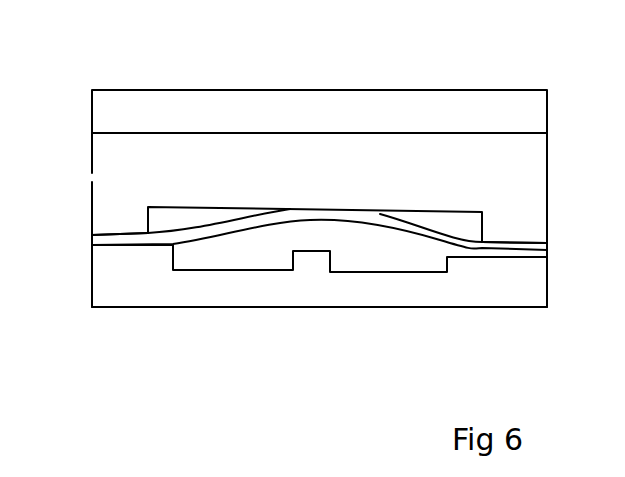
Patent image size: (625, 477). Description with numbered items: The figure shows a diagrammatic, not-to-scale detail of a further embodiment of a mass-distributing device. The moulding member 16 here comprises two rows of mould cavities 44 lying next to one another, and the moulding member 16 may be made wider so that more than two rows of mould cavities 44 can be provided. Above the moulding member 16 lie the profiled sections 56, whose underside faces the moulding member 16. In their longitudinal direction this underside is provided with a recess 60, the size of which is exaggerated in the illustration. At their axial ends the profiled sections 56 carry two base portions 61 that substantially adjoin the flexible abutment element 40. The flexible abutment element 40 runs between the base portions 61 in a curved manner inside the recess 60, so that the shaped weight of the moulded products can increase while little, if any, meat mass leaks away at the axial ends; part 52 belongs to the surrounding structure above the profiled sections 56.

The moulding member 16 is at (525, 288).
The flexible abutment element 40 is at (532, 249).
The mould cavities 44 is at (222, 261).
The cover 52 is at (508, 112).
The profiled sections 56 is at (524, 177).
The recess 60 is at (181, 218).
The base portions 61 is at (117, 222).